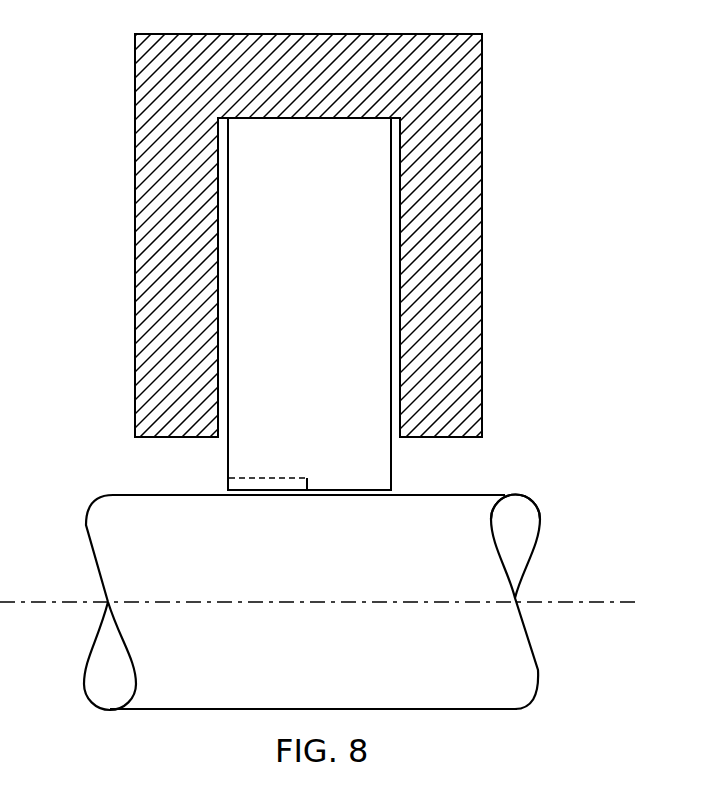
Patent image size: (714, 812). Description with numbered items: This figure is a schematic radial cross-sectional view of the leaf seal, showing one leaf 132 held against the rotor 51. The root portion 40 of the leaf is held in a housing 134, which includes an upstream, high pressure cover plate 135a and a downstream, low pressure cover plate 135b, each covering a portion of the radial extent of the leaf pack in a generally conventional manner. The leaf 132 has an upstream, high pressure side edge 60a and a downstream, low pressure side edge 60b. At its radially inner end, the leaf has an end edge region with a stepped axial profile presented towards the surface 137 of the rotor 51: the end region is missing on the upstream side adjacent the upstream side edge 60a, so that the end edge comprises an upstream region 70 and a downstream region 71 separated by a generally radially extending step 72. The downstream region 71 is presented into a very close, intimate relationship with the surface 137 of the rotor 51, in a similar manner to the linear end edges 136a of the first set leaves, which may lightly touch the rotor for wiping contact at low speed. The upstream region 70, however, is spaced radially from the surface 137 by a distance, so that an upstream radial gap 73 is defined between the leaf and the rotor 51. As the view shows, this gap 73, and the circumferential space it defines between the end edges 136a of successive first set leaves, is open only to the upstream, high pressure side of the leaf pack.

The housing 134 is at (468, 63).
The upstream cover plate 135a is at (155, 140).
The downstream cover plate 135b is at (470, 150).
The leaf 132 is at (360, 348).
The root portion 40 is at (322, 196).
The upstream side edge 60a is at (227, 310).
The downstream side edge 60b is at (391, 298).
The upstream region 70 is at (273, 478).
The downstream region 71 is at (362, 490).
The step 72 is at (315, 484).
The upstream radial gap 73 is at (223, 488).
The end edge 136a is at (342, 493).
The surface 137 is at (492, 490).
The rotor 51 is at (321, 587).